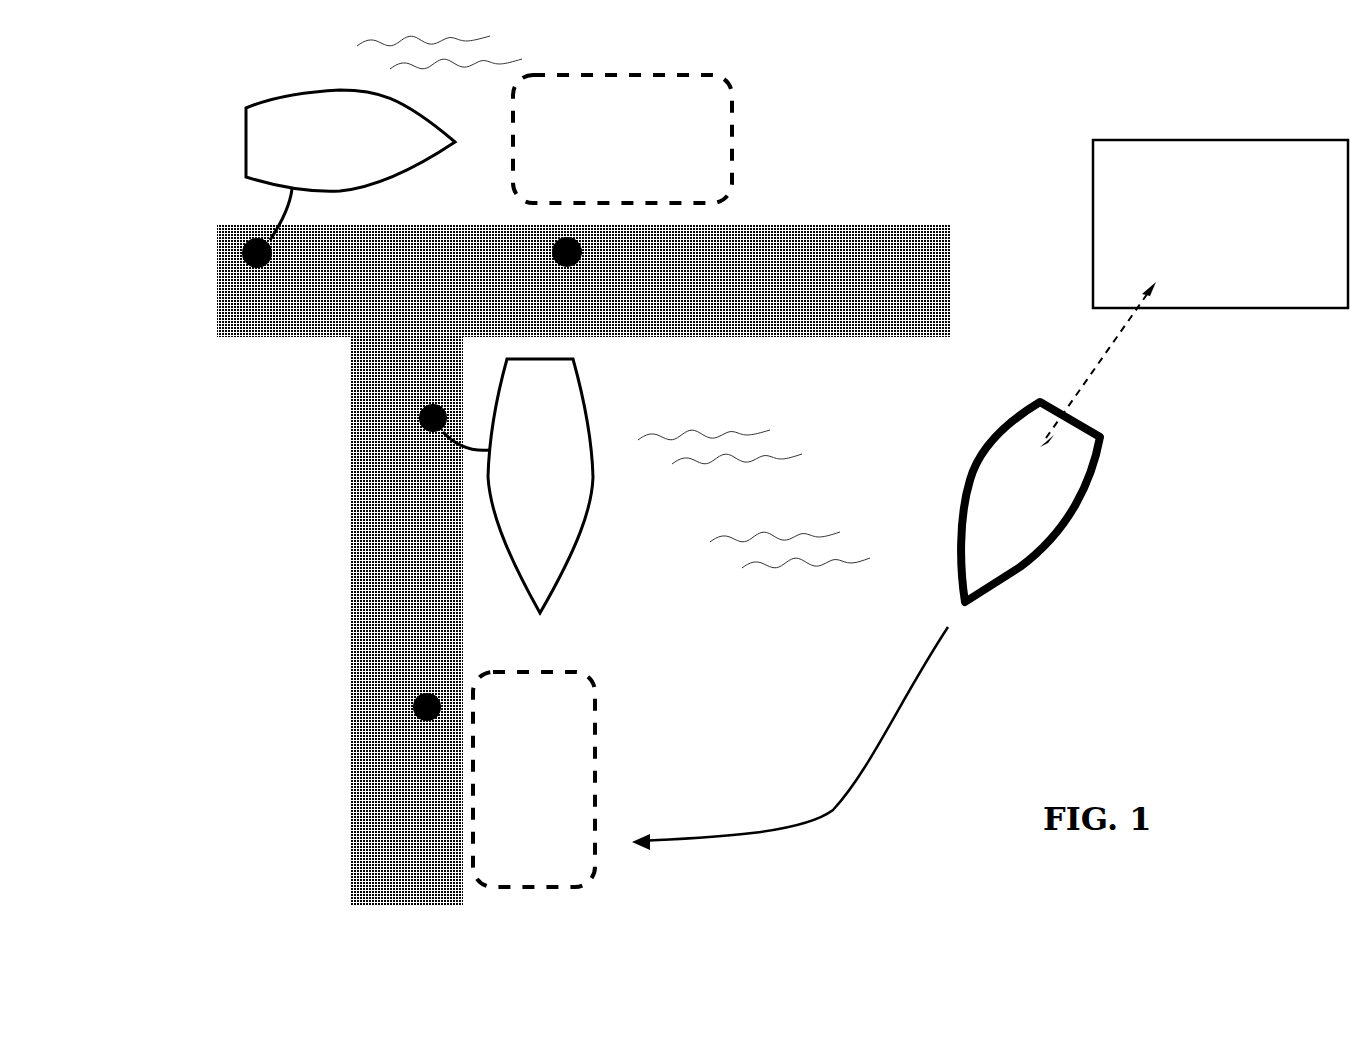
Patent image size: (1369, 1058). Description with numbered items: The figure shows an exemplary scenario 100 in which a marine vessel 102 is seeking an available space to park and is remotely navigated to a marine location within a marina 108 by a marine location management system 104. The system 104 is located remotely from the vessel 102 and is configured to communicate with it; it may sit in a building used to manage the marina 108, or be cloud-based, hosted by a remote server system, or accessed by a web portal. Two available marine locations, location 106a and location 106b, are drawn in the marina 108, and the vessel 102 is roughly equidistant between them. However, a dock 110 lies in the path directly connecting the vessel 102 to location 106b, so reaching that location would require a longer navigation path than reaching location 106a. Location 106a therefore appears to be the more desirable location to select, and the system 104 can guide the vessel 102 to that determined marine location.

The scenario 100 is at (1106, 125).
The marine vessel 102 is at (1002, 509).
The marine location management system 104 is at (1205, 263).
The location 106a is at (512, 794).
The location 106b is at (604, 146).
The marina 108 is at (265, 519).
The dock 110 is at (673, 294).